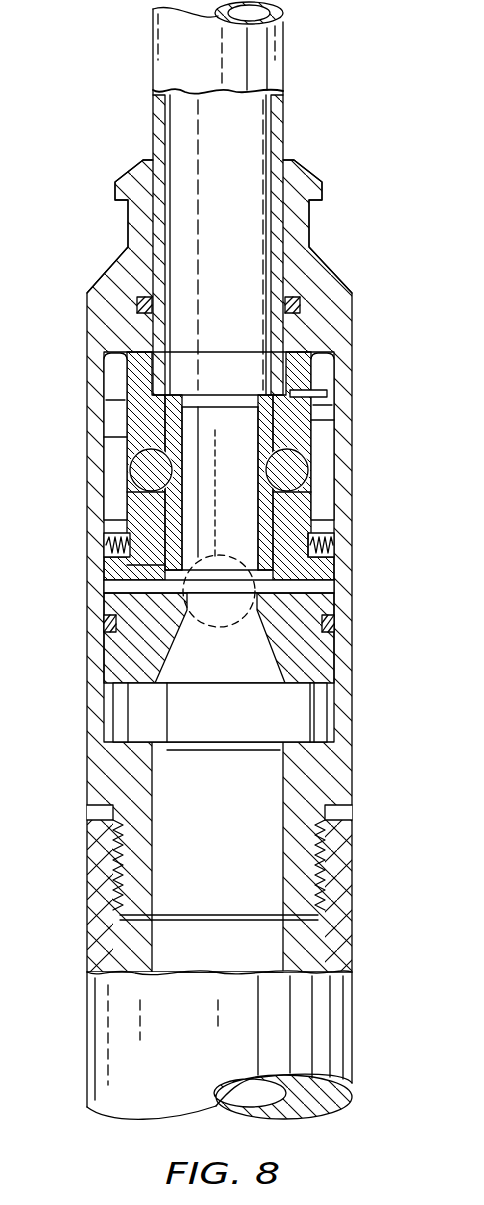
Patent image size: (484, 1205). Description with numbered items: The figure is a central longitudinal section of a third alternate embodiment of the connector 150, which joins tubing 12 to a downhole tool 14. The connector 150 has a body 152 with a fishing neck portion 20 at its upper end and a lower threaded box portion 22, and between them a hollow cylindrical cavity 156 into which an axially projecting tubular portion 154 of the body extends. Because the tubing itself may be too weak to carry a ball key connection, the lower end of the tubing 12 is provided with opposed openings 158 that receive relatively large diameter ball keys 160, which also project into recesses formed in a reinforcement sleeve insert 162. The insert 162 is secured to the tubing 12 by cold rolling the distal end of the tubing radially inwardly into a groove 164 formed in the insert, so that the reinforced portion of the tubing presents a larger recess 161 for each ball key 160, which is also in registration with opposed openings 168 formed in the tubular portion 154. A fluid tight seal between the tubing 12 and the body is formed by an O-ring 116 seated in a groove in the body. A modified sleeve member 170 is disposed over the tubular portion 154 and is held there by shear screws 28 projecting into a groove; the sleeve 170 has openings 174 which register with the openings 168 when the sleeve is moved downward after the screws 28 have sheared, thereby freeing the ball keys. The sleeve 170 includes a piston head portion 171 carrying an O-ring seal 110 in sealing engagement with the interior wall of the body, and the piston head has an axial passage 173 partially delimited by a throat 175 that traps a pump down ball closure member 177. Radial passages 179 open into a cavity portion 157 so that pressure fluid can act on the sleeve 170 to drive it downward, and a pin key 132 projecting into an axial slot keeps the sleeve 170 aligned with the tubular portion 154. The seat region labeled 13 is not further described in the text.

The tubing 12 is at (283, 50).
The tool 14 is at (352, 1026).
The fishing neck portion 20 is at (320, 177).
The threaded box portion 22 is at (318, 891).
The shear screws 28 is at (334, 552).
The O-ring seal 110 is at (334, 626).
The O-ring 116 is at (286, 304).
The seat 13 is at (125, 571).
The pin key 132 is at (313, 393).
The connector 150 is at (352, 318).
The body 152 is at (352, 447).
The tubular portion 154 is at (302, 513).
The cylindrical cavity 156 is at (260, 723).
The cavity portion 157 is at (105, 437).
The opposed openings 158 is at (181, 441).
The ball keys 160 is at (145, 470).
The recess 161 is at (191, 468).
The reinforcement sleeve insert 162 is at (180, 413).
The groove 164 is at (112, 526).
The opposed openings 168 is at (308, 478).
The sleeve member 170 is at (334, 531).
The piston head portion 171 is at (334, 675).
The axial passage 173 is at (252, 674).
The openings 174 is at (114, 418).
The throat 175 is at (207, 546).
The pump down ball closure member 177 is at (201, 692).
The radial passages 179 is at (125, 589).